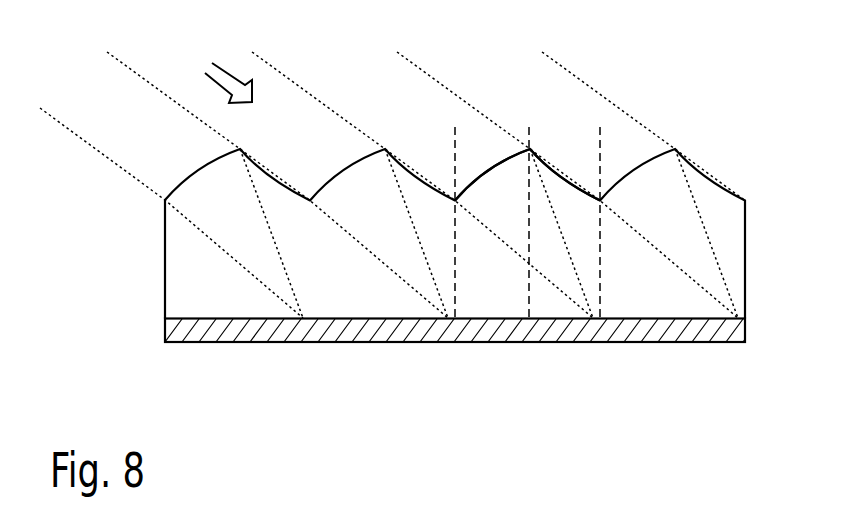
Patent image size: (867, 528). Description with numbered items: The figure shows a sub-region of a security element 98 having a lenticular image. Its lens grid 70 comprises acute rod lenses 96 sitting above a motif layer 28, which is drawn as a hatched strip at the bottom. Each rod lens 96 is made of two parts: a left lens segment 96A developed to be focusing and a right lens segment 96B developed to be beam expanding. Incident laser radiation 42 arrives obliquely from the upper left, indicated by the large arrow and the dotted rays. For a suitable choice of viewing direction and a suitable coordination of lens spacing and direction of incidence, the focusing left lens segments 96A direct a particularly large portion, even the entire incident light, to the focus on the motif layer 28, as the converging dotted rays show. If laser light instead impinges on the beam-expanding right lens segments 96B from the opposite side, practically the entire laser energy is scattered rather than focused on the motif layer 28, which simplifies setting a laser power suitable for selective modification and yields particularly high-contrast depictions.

The motif layer 28 is at (745, 333).
The lens grid 70 is at (737, 152).
The security element 98 is at (107, 220).
The laser radiation 42 is at (232, 68).
The rod lenses 96 is at (523, 181).
The left lens segment 96A is at (490, 185).
The right lens segment 96B is at (563, 198).